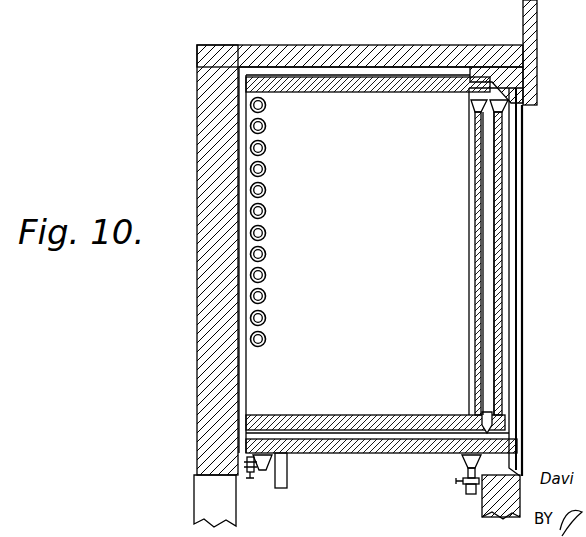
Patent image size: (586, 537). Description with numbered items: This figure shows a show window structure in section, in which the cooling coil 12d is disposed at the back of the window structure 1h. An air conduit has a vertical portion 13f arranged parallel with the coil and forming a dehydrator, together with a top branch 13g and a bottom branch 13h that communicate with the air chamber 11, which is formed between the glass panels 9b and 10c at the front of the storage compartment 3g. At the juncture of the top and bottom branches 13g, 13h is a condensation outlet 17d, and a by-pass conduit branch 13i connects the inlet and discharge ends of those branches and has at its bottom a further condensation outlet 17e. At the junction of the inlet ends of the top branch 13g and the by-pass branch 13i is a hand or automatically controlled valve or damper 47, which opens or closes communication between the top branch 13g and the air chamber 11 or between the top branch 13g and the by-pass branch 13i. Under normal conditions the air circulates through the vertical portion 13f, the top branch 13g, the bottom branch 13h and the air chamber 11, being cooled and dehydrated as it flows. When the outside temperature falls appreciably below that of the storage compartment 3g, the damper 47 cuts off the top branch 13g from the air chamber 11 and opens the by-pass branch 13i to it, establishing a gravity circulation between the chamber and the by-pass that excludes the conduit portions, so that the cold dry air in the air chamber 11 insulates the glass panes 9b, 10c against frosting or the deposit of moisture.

The window structure 1h is at (230, 46).
The top branch 13g is at (377, 72).
The valve or damper 47 is at (500, 76).
The glass panel 9b is at (503, 198).
The glass panel 10c is at (470, 210).
The air chamber 11 is at (487, 224).
The by-pass conduit branch 13i is at (512, 322).
The storage compartment 3g is at (357, 252).
The cooling coil 12d is at (266, 209).
The vertical portion 13f is at (239, 294).
The bottom branch 13h is at (372, 433).
The condensation outlet 17d is at (260, 475).
The condensation outlet 17e is at (459, 486).